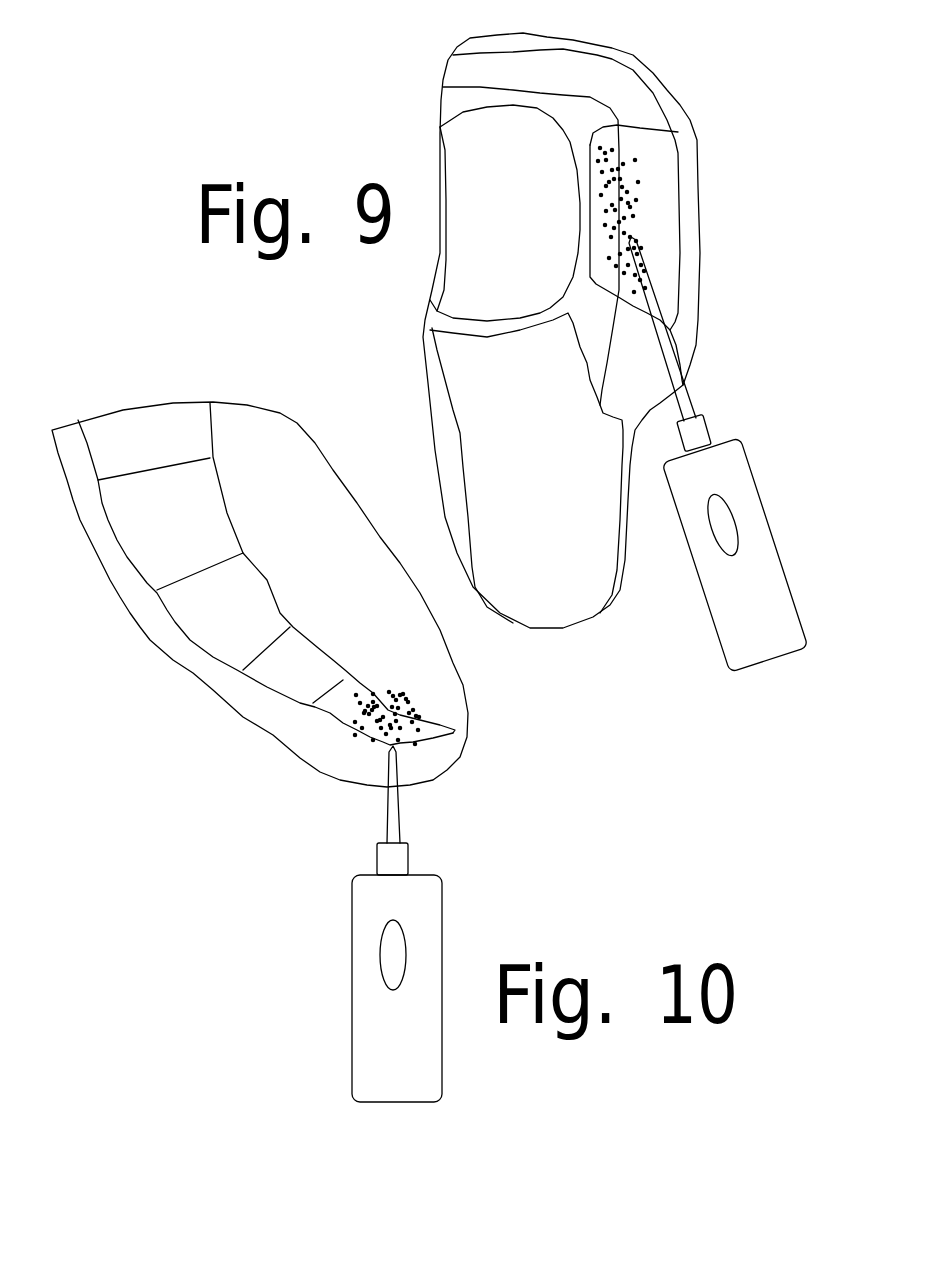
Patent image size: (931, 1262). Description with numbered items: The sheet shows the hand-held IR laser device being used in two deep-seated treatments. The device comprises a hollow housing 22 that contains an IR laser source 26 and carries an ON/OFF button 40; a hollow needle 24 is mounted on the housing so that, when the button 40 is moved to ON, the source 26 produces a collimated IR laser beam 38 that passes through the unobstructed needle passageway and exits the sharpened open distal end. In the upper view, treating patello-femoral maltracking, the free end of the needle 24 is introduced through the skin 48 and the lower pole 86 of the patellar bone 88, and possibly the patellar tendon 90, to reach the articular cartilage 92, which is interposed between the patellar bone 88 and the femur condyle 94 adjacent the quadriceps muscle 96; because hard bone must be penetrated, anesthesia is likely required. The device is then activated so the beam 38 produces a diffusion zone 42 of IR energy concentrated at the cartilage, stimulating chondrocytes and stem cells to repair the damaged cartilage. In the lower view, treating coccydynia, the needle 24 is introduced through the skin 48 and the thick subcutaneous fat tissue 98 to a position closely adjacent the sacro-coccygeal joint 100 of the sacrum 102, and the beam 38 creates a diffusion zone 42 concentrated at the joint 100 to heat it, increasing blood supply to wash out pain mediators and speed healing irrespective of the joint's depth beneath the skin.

In FIG. 9, the housing 22 is at (725, 475).
In FIG. 10, the housing 22 is at (367, 908).
In FIG. 9, the needle 24 is at (682, 387).
In FIG. 10, the needle 24 is at (395, 813).
In FIG. 9, the IR laser source 26 is at (645, 280).
In FIG. 10, the IR laser source 26 is at (390, 748).
In FIG. 9, the IR laser beam 38 is at (645, 265).
In FIG. 10, the IR laser beam 38 is at (398, 754).
In FIG. 9, the ON/OFF switch or button 40 is at (728, 535).
In FIG. 10, the ON/OFF switch or button 40 is at (390, 953).
In FIG. 9, the diffusion zone 42 is at (638, 228).
In FIG. 10, the diffusion zone 42 is at (375, 738).
In FIG. 9, the skin 48 is at (698, 177).
In FIG. 10, the skin 48 is at (270, 732).
In FIG. 9, the lower pole 86 is at (672, 317).
In FIG. 9, the patellar bone 88 is at (648, 157).
In FIG. 9, the patellar tendon 90 is at (623, 358).
In FIG. 9, the articular cartilage 92 is at (602, 143).
In FIG. 9, the femur condyle 94 is at (485, 147).
In FIG. 9, the quadriceps muscle 96 is at (610, 87).
In FIG. 10, the subcutaneous tissue 98 is at (217, 665).
In FIG. 10, the sacro-coccygeal joint 100 is at (400, 718).
In FIG. 10, the sacrum 102 is at (172, 437).